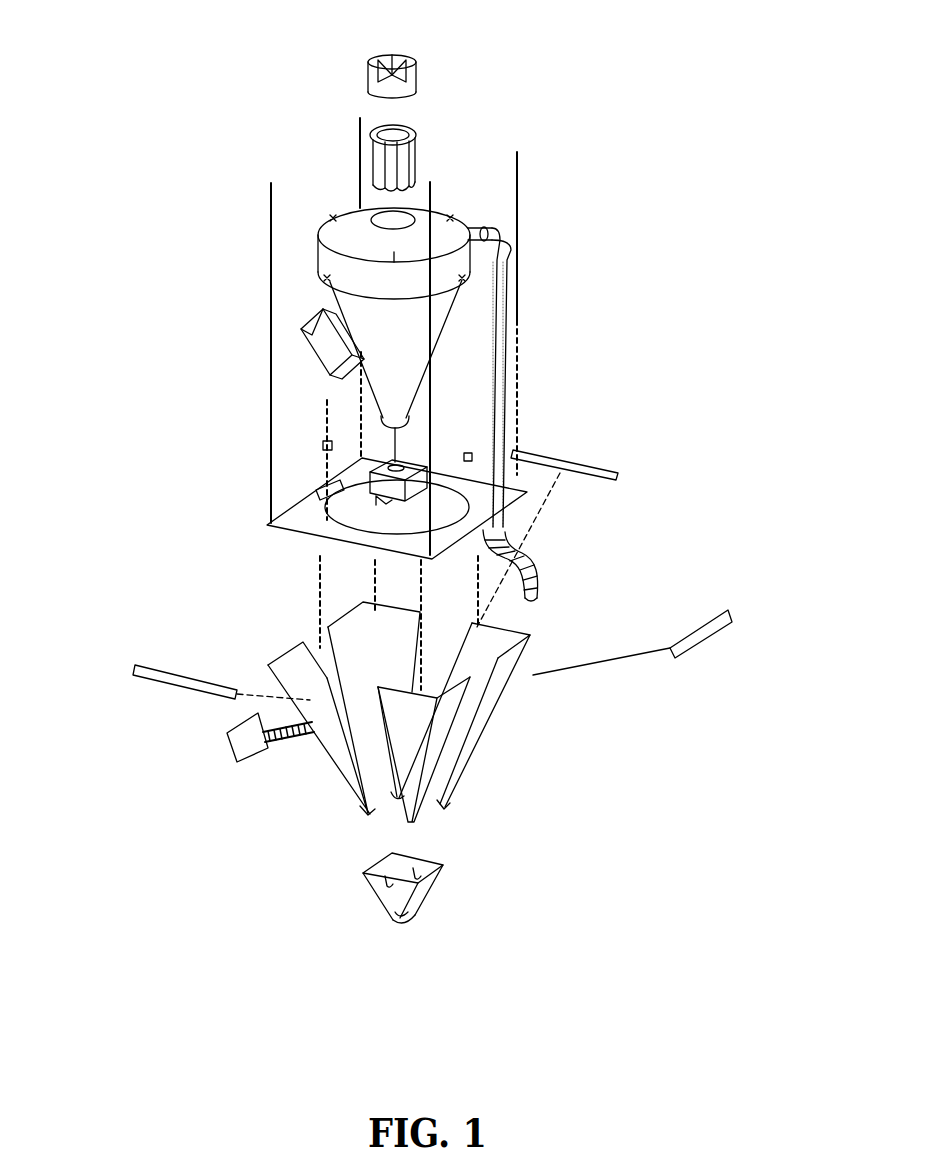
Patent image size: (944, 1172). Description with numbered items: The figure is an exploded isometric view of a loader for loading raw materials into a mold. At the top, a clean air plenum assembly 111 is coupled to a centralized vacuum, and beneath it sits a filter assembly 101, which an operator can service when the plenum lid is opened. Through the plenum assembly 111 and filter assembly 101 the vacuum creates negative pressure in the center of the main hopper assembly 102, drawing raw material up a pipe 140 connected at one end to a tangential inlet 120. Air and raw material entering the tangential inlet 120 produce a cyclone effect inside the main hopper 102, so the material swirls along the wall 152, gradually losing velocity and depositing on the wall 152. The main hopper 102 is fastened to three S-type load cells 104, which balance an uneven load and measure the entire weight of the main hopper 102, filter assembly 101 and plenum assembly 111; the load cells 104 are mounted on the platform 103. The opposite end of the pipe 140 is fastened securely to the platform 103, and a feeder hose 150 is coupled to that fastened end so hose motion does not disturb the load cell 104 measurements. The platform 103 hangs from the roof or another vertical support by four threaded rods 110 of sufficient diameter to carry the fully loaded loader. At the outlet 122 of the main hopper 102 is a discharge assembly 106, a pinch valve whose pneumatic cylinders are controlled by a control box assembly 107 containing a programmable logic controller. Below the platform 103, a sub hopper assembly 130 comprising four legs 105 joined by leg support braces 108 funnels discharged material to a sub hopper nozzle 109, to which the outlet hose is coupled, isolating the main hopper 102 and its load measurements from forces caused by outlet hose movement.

The filter assembly 101 is at (365, 130).
The main hopper assembly 102 is at (308, 249).
The platform 103 is at (262, 520).
The S-type load cells 104 is at (315, 442).
The legs 105 is at (483, 737).
The discharge assembly 106 is at (358, 466).
The control box assembly 107 is at (290, 325).
The leg support braces 108 is at (739, 612).
The sub hopper nozzle 109 is at (405, 928).
The threaded rods 110 is at (524, 149).
The clean air plenum assembly 111 is at (362, 60).
The tangential inlet 120 is at (486, 225).
The outlet 122 is at (413, 421).
The sub hopper assembly 130 is at (547, 616).
The pipe 140 is at (505, 353).
The feeder hose 150 is at (533, 562).
The wall 152 is at (388, 357).